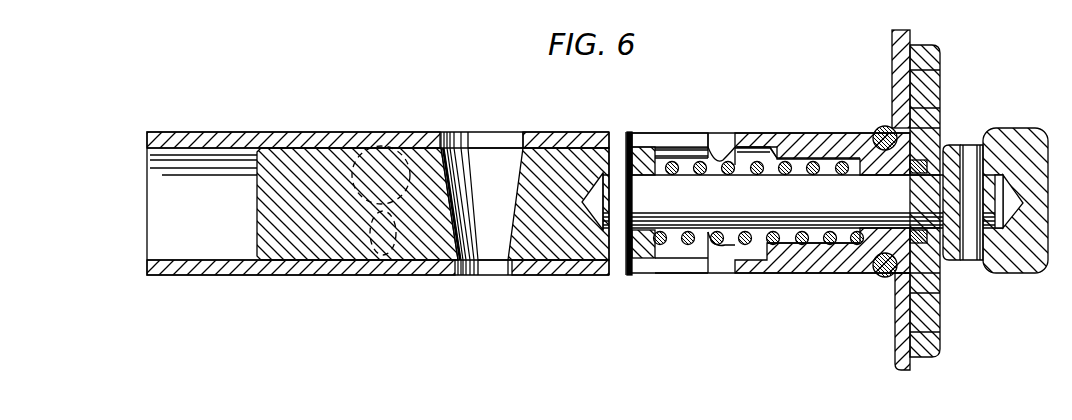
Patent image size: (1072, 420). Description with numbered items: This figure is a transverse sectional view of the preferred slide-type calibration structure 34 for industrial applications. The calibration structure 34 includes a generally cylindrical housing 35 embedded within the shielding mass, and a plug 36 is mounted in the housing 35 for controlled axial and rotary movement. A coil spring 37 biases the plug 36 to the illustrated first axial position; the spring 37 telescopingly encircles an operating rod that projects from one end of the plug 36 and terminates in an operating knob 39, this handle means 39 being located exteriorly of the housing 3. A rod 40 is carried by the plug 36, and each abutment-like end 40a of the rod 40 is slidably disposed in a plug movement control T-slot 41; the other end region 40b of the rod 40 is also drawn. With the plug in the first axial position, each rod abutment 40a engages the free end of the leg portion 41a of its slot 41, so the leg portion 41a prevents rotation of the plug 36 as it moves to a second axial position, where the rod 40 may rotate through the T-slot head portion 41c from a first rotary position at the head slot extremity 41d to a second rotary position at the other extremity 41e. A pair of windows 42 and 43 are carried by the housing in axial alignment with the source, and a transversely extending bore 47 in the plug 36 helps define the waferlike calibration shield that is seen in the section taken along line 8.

The housing 3 is at (900, 342).
The section line 8- 8 is at (405, 89).
The calibration structure 34 is at (747, 280).
The cylindrical housing 35 is at (410, 138).
The plug 36 is at (423, 252).
The coil spring 37 is at (677, 166).
The operating knob 39 is at (1012, 137).
The rod 40 is at (620, 223).
The rod abutment end 40a is at (617, 135).
The rod end plate 40b is at (619, 267).
The plug movement control T-slot 41 is at (712, 160).
The leg portion of T-slot 41a is at (647, 135).
The T-slot head portion 41c is at (723, 138).
The head slot extremity 41d is at (742, 141).
The head slot extremity 41e is at (725, 243).
The window 42 is at (486, 138).
The window 43 is at (488, 268).
The transversely extending bore 47 is at (428, 133).